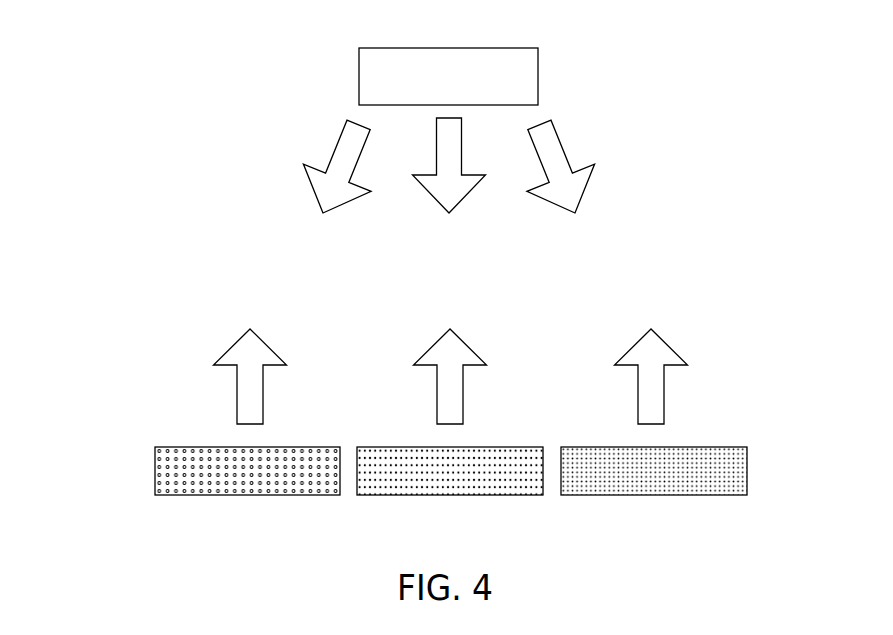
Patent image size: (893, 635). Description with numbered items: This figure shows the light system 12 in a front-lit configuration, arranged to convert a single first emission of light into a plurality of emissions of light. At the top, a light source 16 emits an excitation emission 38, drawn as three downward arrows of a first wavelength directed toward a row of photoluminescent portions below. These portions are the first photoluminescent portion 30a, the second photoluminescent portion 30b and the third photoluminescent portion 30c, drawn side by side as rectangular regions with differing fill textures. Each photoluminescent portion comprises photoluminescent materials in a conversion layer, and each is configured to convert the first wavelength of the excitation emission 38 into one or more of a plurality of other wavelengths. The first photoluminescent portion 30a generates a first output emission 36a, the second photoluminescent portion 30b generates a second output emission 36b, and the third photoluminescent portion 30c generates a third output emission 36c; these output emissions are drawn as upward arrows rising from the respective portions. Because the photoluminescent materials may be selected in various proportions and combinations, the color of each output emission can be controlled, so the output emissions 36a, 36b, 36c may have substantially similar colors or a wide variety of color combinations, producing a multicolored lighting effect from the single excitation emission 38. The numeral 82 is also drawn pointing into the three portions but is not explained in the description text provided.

The light system 12 is at (122, 65).
The light source 16 is at (462, 84).
The excitation emission 38 is at (362, 153).
The first output emission 36a is at (233, 349).
The second output emission 36b is at (440, 347).
The third output emission 36c is at (637, 348).
The first photoluminescent portion 30a is at (180, 452).
The second photoluminescent portion 30b is at (415, 453).
The third photoluminescent portion 30c is at (607, 453).
The wavelength converting particles 82 is at (610, 475).